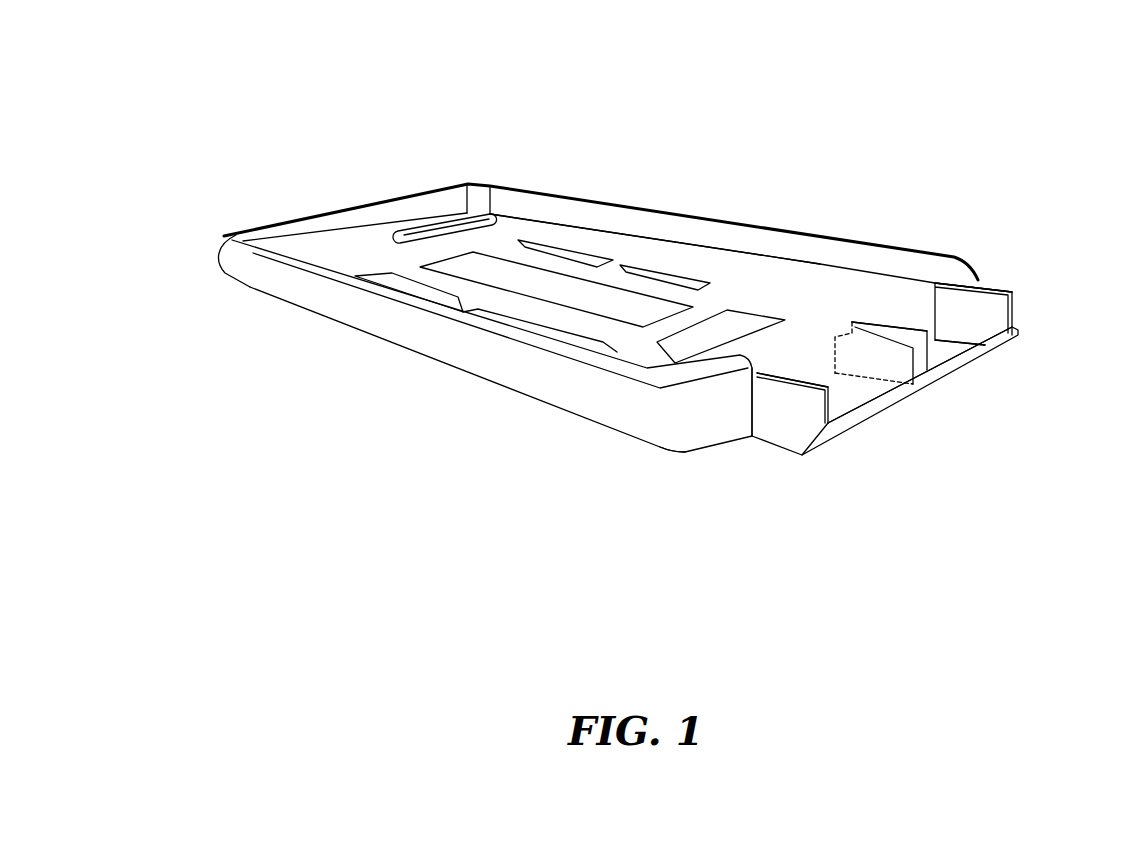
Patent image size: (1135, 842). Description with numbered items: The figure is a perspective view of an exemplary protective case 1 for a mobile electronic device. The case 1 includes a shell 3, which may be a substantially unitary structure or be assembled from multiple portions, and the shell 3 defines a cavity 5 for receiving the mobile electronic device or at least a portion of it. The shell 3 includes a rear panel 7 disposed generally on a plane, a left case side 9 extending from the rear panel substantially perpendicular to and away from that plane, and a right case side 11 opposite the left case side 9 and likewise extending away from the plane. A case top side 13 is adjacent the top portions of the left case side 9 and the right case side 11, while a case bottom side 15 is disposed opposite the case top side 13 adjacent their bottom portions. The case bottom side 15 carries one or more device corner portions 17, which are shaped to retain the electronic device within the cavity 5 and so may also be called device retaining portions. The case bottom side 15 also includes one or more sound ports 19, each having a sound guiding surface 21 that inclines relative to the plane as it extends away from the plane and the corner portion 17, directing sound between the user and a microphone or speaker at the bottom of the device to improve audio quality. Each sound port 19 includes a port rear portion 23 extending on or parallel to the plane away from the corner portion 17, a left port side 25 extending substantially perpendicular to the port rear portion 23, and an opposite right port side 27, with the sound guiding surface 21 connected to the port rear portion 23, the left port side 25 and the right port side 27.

The protective case 1 is at (1012, 135).
The shell 3 is at (755, 300).
The cavity 5 is at (660, 246).
The rear panel 7 is at (790, 282).
The left case side 9 is at (390, 328).
The right case side 11 is at (908, 262).
The case top side 13 is at (423, 205).
The case bottom side 15 is at (730, 427).
The device corner portion 17 is at (968, 278).
The sound port 19 is at (874, 451).
The sound guiding surface 21 is at (850, 423).
The port rear portion 23 is at (948, 347).
The left port side 25 is at (892, 332).
The right port side 27 is at (987, 300).